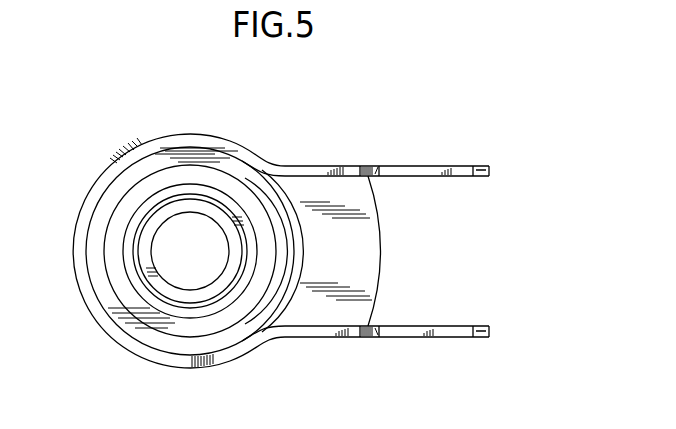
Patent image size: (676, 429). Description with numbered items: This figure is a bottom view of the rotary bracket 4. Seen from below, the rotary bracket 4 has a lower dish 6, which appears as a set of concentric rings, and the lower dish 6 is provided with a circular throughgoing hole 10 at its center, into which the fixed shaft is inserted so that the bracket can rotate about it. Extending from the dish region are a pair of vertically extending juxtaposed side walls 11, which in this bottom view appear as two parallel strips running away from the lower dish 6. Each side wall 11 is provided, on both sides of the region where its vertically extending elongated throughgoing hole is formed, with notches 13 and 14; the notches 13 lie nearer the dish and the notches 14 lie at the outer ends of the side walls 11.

The rotary bracket 4 is at (468, 132).
The lower dish 6 is at (238, 177).
The circular throughgoing hole 10 is at (167, 234).
The side wall 11 is at (345, 166).
The notch 13 is at (375, 166).
The notch 14 is at (490, 170).